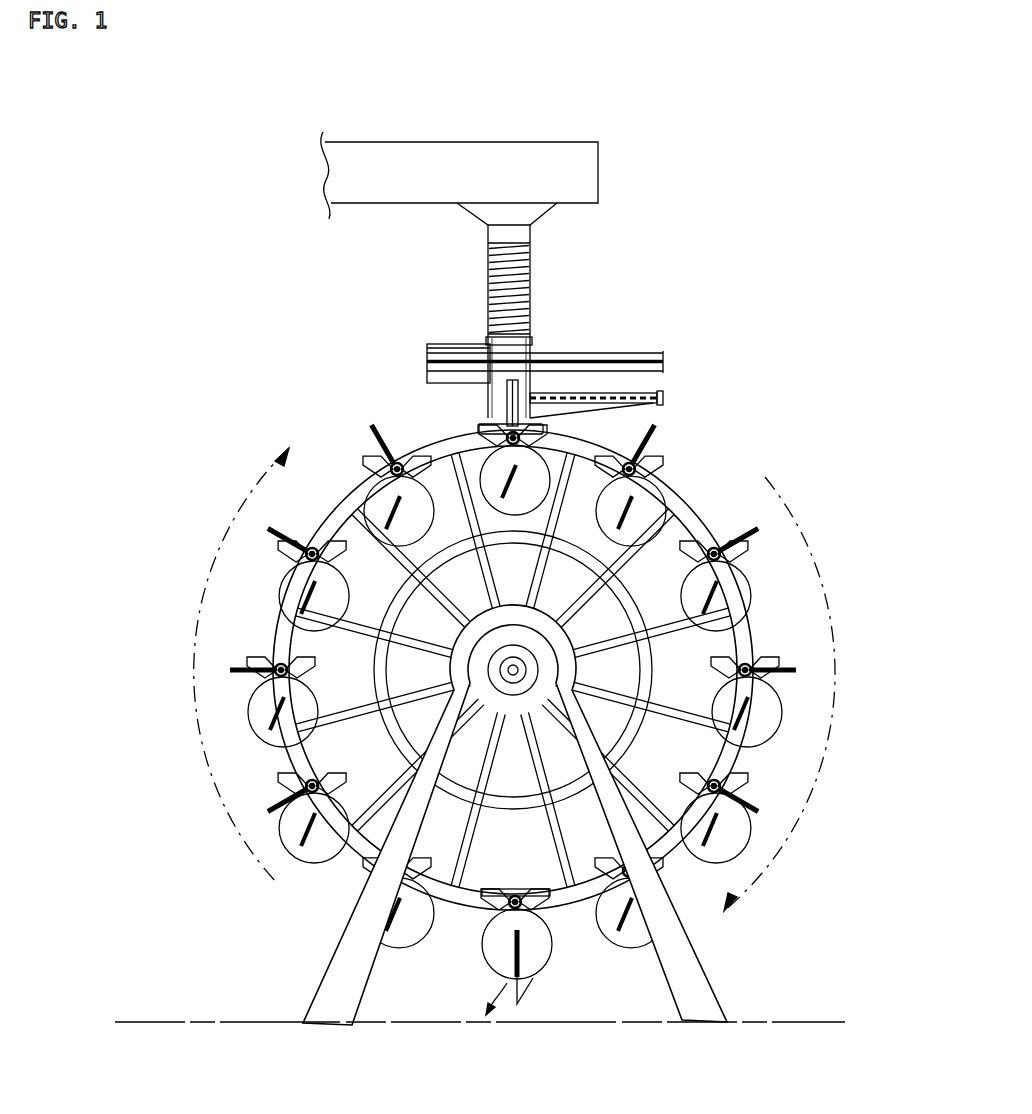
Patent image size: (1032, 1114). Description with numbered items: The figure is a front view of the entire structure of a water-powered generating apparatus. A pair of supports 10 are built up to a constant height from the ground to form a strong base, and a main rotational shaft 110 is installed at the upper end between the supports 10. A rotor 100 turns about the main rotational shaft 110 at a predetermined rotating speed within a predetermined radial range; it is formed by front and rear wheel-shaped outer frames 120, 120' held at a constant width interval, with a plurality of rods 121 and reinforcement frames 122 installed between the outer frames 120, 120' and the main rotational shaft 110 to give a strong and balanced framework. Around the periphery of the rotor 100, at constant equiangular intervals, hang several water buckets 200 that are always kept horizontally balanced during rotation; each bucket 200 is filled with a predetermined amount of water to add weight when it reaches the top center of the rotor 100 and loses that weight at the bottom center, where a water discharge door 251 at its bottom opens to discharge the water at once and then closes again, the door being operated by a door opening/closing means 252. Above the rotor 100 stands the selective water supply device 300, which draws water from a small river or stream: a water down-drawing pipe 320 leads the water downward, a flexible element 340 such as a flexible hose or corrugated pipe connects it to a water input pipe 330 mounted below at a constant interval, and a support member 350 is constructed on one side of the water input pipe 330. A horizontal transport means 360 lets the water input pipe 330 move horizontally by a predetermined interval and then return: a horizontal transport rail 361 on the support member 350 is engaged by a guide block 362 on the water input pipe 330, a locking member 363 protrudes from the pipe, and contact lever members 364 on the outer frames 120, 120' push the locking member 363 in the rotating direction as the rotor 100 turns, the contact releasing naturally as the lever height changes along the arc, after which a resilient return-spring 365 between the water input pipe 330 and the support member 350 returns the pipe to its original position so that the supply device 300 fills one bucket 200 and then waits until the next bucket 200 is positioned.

The supports 10 is at (527, 146).
The rotor 100 is at (145, 533).
The main rotational shaft 110 is at (507, 674).
The front wheel-shaped outer frame 120 is at (354, 670).
The rear wheel-shaped outer frame 120' is at (513, 670).
The rods 121 is at (277, 646).
The reinforcement frames 122 is at (393, 610).
The water bucket 200 is at (372, 440).
The water discharge door 251 is at (537, 992).
The door opening/closing means 252 is at (525, 952).
The selective water supply device 300 is at (509, 475).
The water down-drawing pipe 320 is at (530, 230).
The water input pipe 330 is at (522, 342).
The flexible element 340 is at (530, 283).
The support member 350 is at (643, 350).
The horizontal transport means 360 is at (503, 538).
The horizontal transport rail 361 is at (428, 355).
The guide block 362 is at (495, 347).
The locking member 363 is at (508, 392).
The contact lever member 364 is at (507, 403).
The resilient return-spring 365 is at (452, 342).